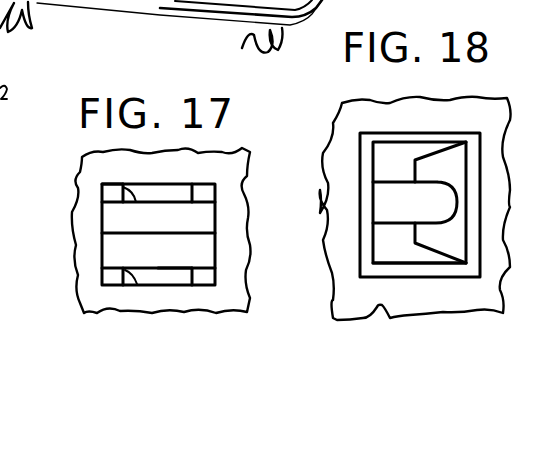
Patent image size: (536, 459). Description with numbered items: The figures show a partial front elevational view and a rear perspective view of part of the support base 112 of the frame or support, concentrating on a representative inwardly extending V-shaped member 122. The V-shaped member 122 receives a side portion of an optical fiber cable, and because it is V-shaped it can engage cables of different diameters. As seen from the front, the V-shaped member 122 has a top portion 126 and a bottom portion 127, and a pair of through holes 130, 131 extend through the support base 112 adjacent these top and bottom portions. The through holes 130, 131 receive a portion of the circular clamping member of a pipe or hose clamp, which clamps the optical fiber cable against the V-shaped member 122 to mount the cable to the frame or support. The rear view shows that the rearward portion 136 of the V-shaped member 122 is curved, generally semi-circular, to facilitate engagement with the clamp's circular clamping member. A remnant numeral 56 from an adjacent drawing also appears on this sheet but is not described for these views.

In FIG. 17, the hinge loop 56 is at (35, 30).
In FIG. 17, the support base 112 is at (222, 150).
In FIG. 18, the support base 112 is at (501, 98).
In FIG. 17, the V-shaped member 122 is at (217, 212).
In FIG. 18, the V-shaped member 122 is at (413, 167).
In FIG. 17, the top portion 126 is at (101, 184).
In FIG. 17, the bottom portion 127 is at (124, 284).
In FIG. 17, the through hole 130 is at (145, 190).
In FIG. 18, the through hole 130 is at (382, 148).
In FIG. 17, the through hole 131 is at (158, 274).
In FIG. 18, the through hole 131 is at (404, 243).
In FIG. 18, the rearward portion 136 is at (402, 207).